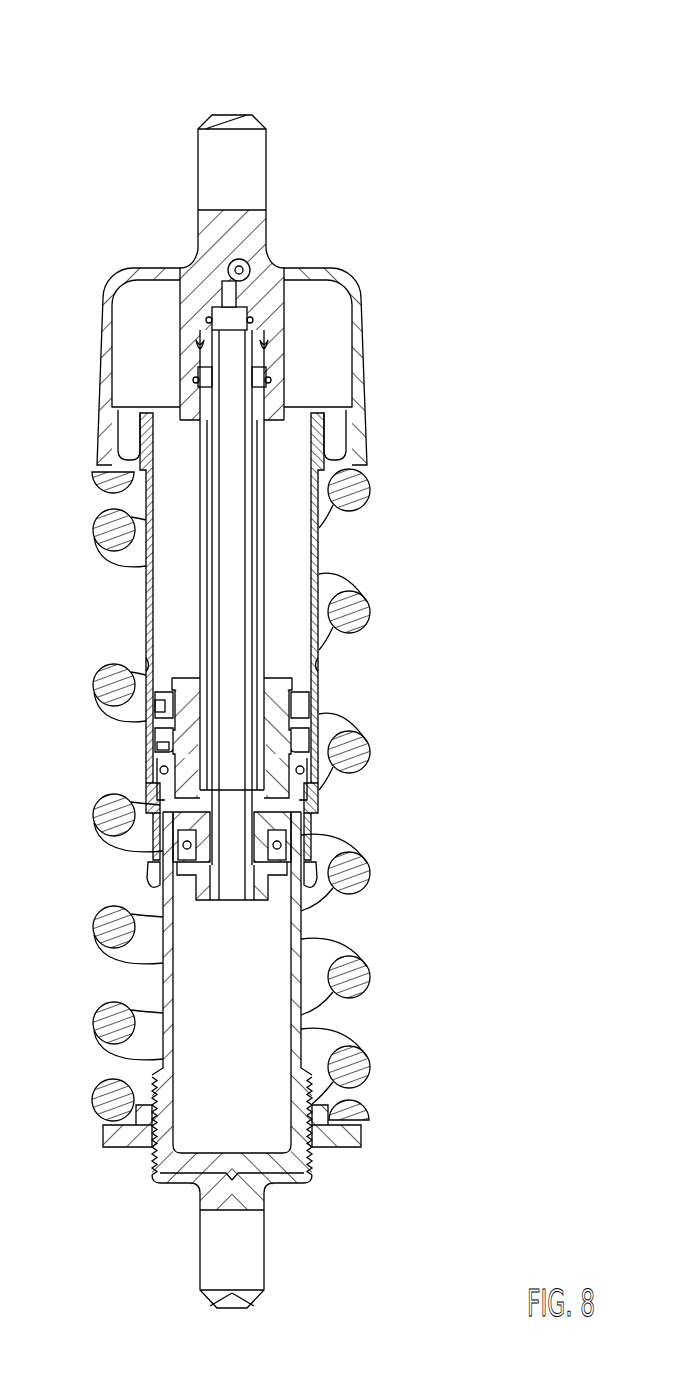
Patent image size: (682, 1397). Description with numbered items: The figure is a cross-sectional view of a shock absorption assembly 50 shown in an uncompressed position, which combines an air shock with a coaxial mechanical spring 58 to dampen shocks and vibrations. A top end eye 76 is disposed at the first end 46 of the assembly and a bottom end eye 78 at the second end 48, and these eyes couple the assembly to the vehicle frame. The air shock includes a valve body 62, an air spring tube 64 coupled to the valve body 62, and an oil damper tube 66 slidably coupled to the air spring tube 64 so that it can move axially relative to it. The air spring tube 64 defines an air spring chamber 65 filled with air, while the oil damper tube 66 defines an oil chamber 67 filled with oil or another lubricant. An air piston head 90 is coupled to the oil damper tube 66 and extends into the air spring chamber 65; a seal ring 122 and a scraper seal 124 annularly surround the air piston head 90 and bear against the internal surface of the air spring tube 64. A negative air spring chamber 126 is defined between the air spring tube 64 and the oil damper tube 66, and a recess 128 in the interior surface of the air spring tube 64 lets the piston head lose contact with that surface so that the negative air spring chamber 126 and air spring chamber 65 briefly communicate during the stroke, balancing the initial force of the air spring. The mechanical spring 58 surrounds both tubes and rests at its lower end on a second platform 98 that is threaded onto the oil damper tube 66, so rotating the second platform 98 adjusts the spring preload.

The shock absorption assembly 50 is at (82, 82).
The first end 46 is at (384, 139).
The second end 48 is at (318, 1296).
The top end eye 76 is at (197, 177).
The valve body 62 is at (362, 322).
The air spring tube 64 is at (318, 555).
The air spring chamber 65 is at (184, 554).
The recess 128 is at (158, 650).
The air piston head 90 is at (318, 700).
The seal ring 122 is at (158, 707).
The scraper seal 124 is at (170, 750).
The negative air spring chamber 126 is at (318, 828).
The mechanical spring 58 is at (355, 873).
The oil damper tube 66 is at (170, 990).
The oil chamber 67 is at (220, 1039).
The second platform 98 is at (365, 1143).
The bottom end eye 78 is at (202, 1257).